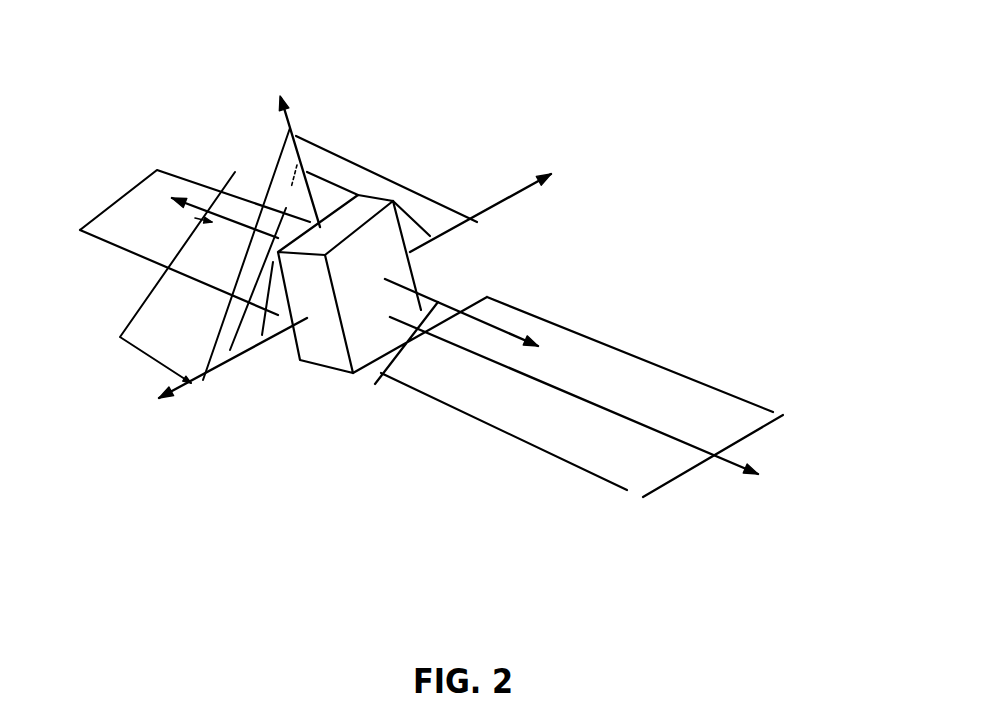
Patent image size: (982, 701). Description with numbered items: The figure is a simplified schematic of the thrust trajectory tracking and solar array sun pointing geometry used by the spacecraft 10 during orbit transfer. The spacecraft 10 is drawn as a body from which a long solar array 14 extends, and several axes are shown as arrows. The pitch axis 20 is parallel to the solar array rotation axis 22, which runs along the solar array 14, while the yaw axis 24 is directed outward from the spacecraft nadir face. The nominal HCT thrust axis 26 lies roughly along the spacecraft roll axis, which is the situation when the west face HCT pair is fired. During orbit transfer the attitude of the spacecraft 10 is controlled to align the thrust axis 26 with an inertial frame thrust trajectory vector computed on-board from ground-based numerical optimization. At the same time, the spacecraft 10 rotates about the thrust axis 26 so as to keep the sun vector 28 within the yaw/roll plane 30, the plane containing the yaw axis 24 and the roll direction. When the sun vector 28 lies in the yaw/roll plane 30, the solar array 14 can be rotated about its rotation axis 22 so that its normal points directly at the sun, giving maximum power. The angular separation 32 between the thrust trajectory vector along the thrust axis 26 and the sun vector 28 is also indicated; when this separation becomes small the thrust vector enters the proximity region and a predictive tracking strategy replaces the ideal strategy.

The spacecraft 10 is at (336, 362).
The solar arrays 14 is at (741, 403).
The pitch axis 20 is at (550, 293).
The solar array rotation axis 22 is at (727, 470).
The yaw axis 24 is at (296, 118).
The nominal HCT thrust axis 26 is at (190, 376).
The sun vector 28 is at (197, 190).
The yaw/roll plane 30 is at (430, 213).
The angular separation 32 is at (160, 271).